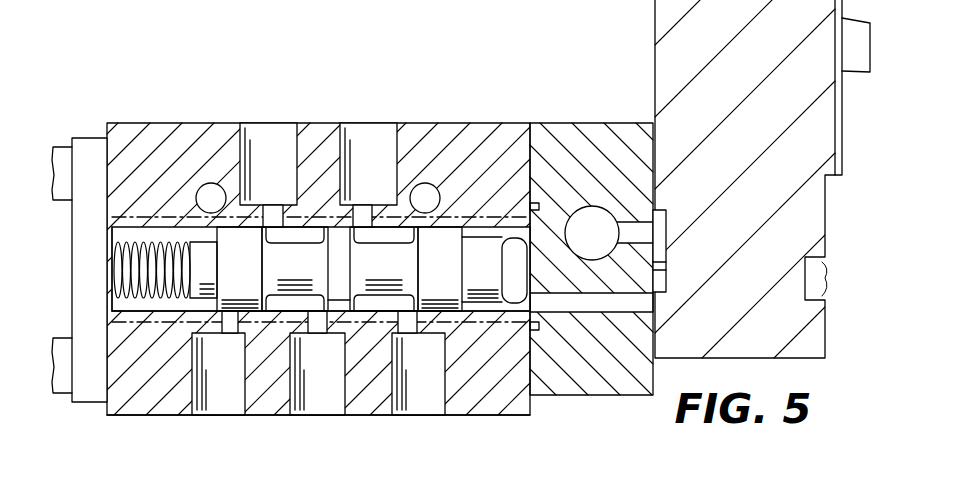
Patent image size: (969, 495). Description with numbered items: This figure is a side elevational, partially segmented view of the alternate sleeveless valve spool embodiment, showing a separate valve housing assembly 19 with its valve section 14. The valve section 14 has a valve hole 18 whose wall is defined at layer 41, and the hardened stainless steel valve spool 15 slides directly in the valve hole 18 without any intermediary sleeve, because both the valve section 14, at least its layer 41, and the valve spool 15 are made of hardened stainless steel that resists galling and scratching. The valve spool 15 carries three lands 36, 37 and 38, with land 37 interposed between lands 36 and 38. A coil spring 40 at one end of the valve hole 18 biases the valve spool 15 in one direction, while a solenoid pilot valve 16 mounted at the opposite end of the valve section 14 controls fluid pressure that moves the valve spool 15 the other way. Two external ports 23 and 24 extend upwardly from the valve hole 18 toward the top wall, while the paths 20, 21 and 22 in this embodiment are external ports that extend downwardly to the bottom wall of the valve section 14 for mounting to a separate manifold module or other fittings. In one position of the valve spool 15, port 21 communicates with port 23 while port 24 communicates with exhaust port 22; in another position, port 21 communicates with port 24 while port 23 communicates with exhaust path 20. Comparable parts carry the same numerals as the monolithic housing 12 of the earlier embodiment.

The housing 12 is at (640, 98).
The valve section 14 is at (167, 148).
The valve spool 15 is at (397, 277).
The solenoid pilot valve 16 is at (790, 127).
The valve hole 18 is at (158, 303).
The wall 19 is at (280, 303).
The internal path 20 is at (420, 394).
The internal path 21 is at (323, 397).
The internal path 22 is at (222, 397).
The external port 23 is at (353, 223).
The external port 24 is at (288, 225).
The land 36 is at (427, 271).
The land 37 is at (296, 305).
The land 38 is at (225, 273).
The coil spring 40 is at (130, 243).
The layer 41 is at (117, 317).